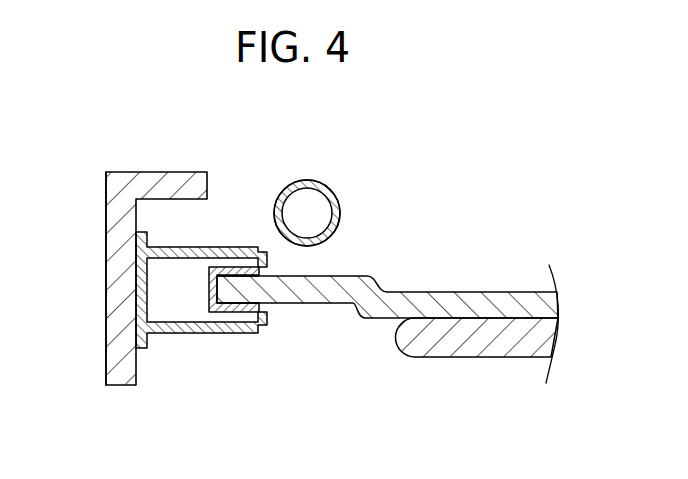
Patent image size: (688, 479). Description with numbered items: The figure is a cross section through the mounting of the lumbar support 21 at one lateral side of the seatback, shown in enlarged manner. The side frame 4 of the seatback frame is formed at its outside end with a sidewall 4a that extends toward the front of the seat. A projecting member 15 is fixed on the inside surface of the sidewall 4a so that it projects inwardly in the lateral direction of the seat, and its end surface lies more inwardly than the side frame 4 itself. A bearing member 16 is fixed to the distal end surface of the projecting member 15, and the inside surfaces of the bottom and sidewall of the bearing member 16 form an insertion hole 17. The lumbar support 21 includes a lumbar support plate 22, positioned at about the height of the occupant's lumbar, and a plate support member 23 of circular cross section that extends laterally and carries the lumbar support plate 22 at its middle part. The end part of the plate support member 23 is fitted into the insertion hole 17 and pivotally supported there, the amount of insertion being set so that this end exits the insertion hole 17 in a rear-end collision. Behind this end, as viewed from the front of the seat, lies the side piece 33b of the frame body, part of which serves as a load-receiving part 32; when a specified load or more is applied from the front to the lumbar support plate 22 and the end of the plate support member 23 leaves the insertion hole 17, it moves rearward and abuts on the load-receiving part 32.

The side frame 4 is at (167, 172).
The sidewall 4a is at (106, 275).
The projecting member 15 is at (182, 334).
The bearing member 16 is at (233, 320).
The insertion hole 17 is at (243, 303).
The lumbar support 21 is at (387, 370).
The lumbar support plate 22 is at (492, 358).
The plate support member 23 is at (333, 305).
The load-receiving part 32 is at (328, 236).
The side piece 33b is at (309, 181).